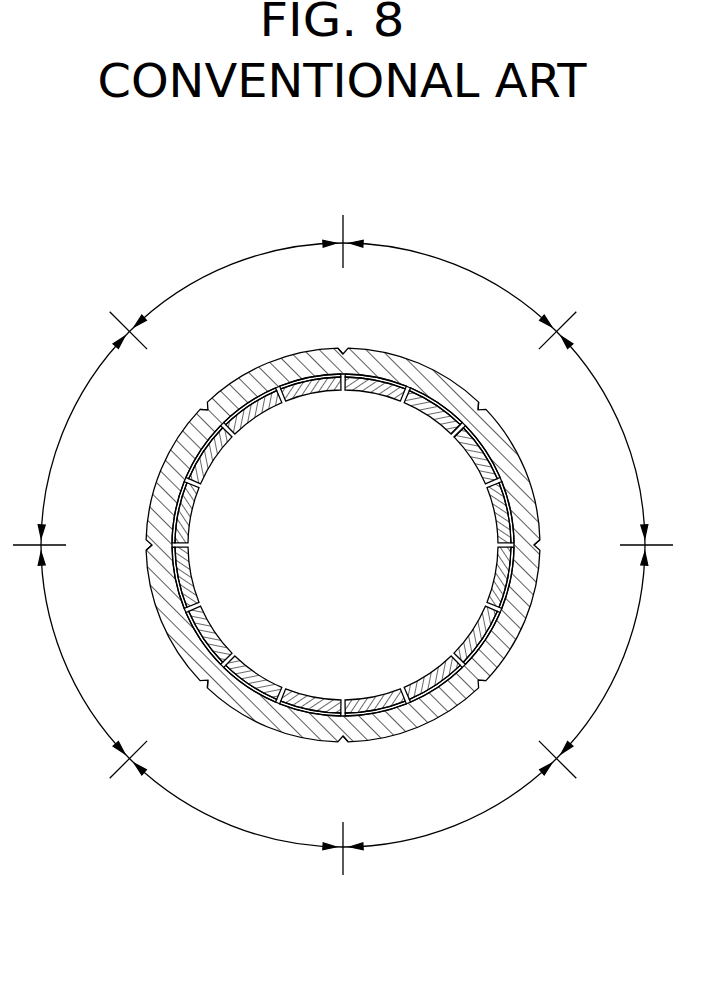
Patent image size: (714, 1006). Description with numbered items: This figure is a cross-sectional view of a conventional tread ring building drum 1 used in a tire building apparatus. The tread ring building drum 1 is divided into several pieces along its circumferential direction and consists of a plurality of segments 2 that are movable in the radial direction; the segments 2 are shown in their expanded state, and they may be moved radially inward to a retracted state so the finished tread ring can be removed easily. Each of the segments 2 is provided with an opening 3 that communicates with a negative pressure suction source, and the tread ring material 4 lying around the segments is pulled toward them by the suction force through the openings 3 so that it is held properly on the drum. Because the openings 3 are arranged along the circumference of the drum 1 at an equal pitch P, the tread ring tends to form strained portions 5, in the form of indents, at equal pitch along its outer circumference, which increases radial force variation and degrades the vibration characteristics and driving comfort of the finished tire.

The tread ring building drum 1 is at (214, 473).
The segments 2 is at (410, 407).
The opening 3 is at (456, 430).
The tread ring material 4 is at (522, 495).
The strained portions 5 is at (343, 342).
The pitch P is at (343, 545).